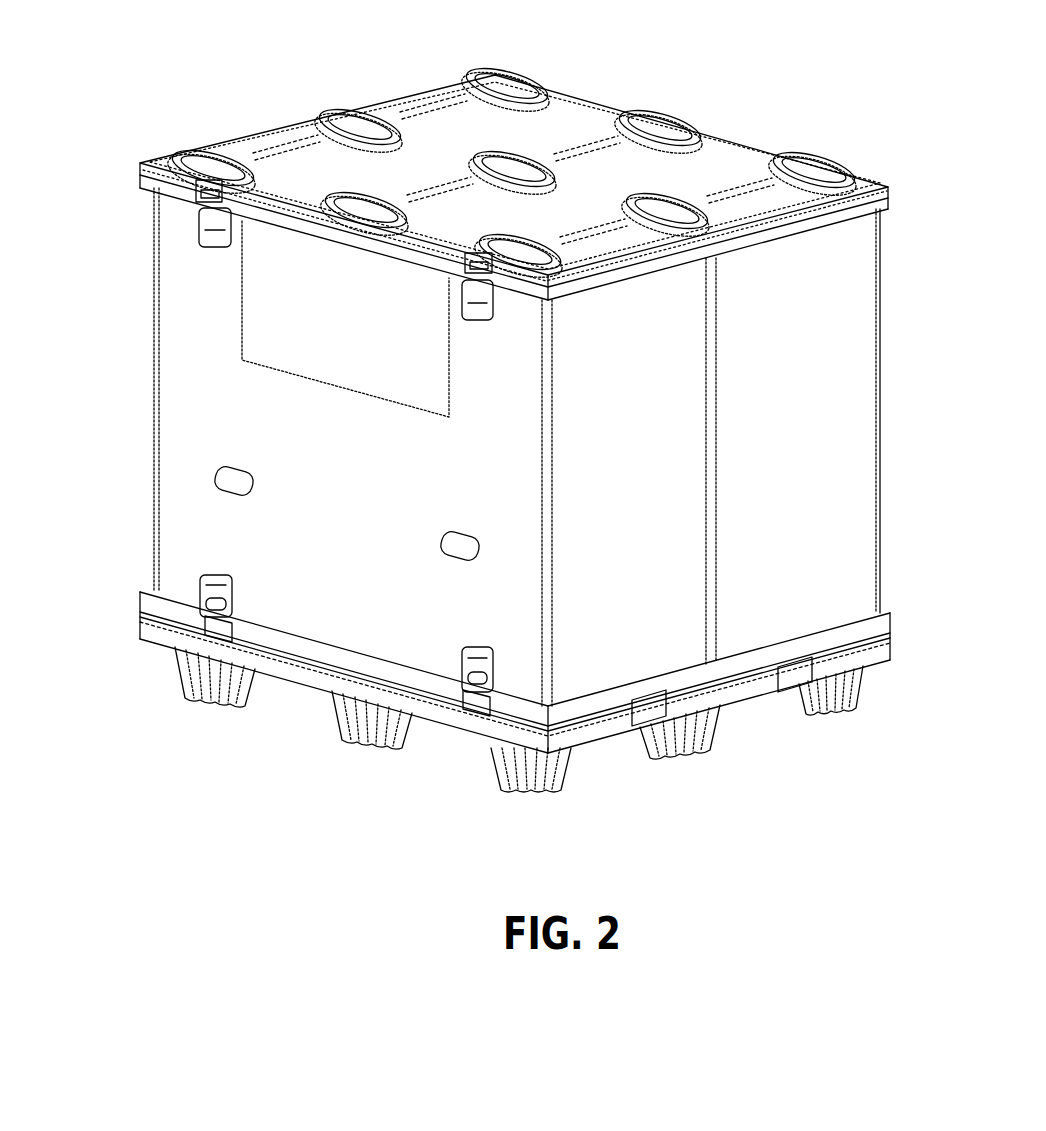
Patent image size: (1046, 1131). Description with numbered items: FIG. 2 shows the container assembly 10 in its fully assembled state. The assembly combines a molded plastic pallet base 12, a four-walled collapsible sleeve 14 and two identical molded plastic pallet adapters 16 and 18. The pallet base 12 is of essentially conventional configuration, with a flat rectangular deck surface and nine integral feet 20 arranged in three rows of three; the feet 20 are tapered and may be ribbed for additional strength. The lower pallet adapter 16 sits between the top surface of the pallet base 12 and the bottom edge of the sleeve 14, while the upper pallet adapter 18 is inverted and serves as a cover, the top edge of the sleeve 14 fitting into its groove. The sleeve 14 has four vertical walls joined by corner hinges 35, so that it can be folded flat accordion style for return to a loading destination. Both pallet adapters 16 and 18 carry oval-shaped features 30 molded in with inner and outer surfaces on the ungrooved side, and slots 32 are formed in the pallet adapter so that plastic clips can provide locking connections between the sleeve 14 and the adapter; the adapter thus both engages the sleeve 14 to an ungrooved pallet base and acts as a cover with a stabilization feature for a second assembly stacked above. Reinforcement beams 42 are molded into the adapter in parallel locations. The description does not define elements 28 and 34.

The container assembly 10 is at (108, 250).
The pallet base 12 is at (882, 658).
The collapsible sleeve 14 is at (867, 510).
The pallet adapter 16 is at (893, 620).
The pallet adapter 18 is at (845, 217).
The feet 20 is at (187, 677).
The latch tab 28 is at (217, 578).
The oval-shaped features 30 is at (647, 120).
The slots 32 is at (225, 632).
The latch recess 34 is at (636, 703).
The corner hinges 35 is at (155, 470).
The M-shaped reinforcement beams 42 is at (420, 105).